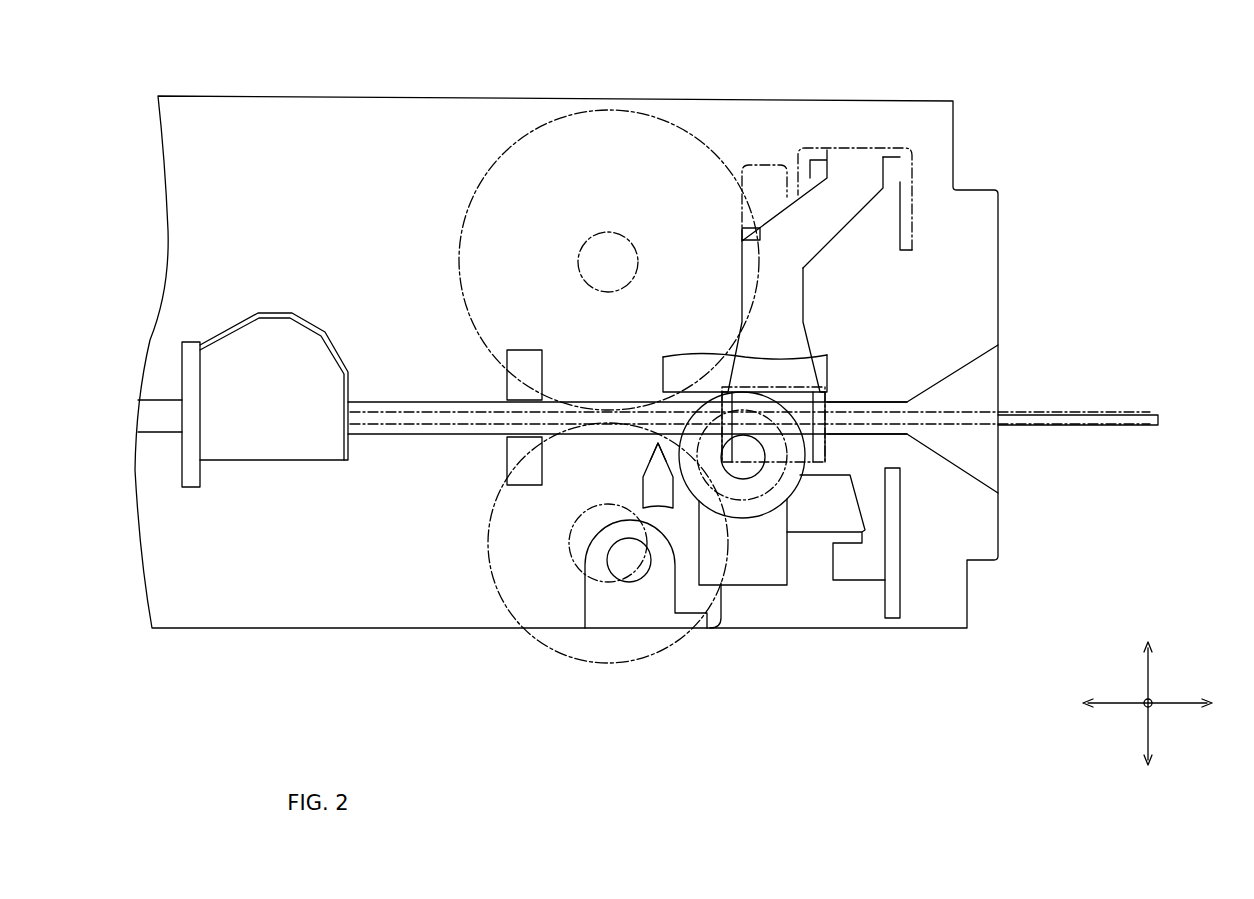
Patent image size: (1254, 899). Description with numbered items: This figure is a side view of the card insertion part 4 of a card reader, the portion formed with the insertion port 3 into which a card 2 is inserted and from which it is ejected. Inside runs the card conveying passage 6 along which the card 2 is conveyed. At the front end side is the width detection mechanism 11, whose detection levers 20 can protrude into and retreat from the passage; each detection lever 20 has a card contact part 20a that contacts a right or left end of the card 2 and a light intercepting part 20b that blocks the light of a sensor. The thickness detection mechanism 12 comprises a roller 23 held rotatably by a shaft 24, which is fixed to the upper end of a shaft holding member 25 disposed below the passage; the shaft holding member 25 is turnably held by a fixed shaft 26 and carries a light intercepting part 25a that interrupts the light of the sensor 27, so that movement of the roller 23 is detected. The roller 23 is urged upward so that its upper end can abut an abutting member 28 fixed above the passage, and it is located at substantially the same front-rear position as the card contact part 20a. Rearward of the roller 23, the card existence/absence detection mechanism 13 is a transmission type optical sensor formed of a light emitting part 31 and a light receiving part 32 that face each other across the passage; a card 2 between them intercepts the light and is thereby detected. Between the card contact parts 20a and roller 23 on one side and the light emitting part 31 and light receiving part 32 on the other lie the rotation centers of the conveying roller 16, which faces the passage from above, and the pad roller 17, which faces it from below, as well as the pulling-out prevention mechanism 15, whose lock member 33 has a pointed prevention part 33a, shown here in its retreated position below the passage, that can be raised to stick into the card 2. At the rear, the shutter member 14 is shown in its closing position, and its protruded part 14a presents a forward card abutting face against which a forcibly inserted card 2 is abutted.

The card 2 is at (1092, 430).
The insertion port 3 is at (998, 378).
The card insertion part 4 is at (1042, 66).
The card conveying passage 6 is at (410, 420).
The width detection mechanism 11 is at (905, 273).
The thickness detection mechanism 12 is at (695, 590).
The card existence/absence detection mechanism 13 is at (478, 375).
The light emitting part 31 is at (507, 360).
The shutter member 14 is at (192, 487).
The protruded part 14a is at (283, 461).
The pulling-out prevention mechanism 15 is at (627, 500).
The conveying roller 16 is at (475, 192).
The pad roller 17 is at (540, 646).
The detection lever 20 is at (805, 284).
The card contact part 20a is at (828, 443).
The light intercepting part 20b is at (765, 165).
The roller 23 is at (742, 516).
The shaft 24 is at (752, 518).
The shaft holding member 25 is at (613, 628).
The light intercepting part 25a is at (808, 545).
The fixed shaft 26 is at (642, 578).
The sensor 27 is at (856, 582).
The abutting member 28 is at (828, 378).
The light receiving part 32 is at (507, 457).
The lock member 33 is at (643, 484).
The prevention part 33a is at (657, 441).